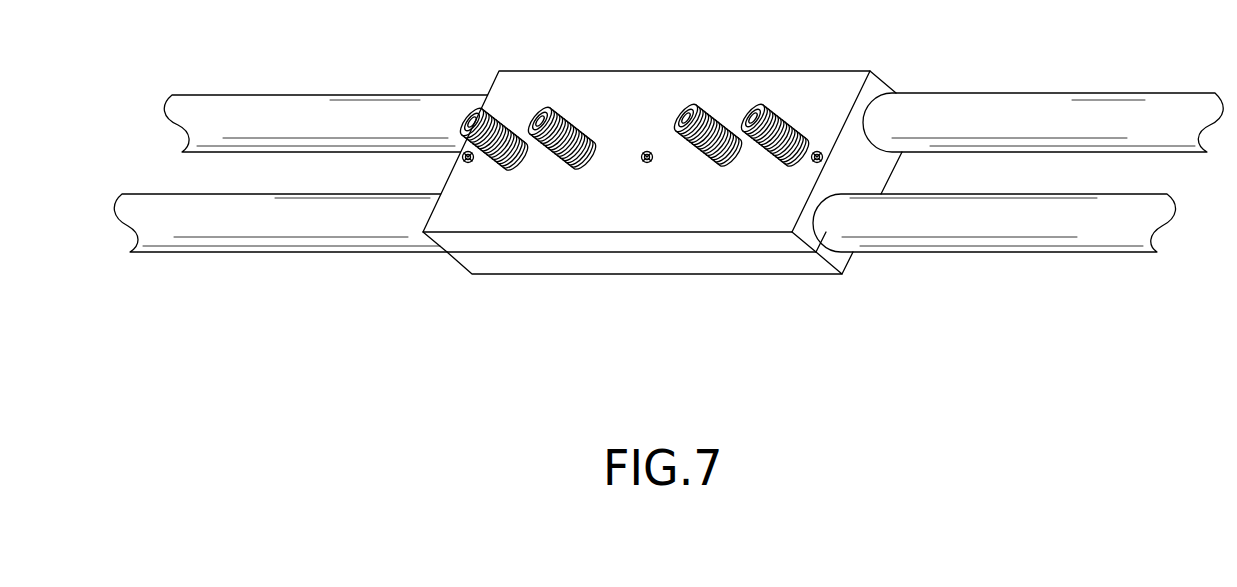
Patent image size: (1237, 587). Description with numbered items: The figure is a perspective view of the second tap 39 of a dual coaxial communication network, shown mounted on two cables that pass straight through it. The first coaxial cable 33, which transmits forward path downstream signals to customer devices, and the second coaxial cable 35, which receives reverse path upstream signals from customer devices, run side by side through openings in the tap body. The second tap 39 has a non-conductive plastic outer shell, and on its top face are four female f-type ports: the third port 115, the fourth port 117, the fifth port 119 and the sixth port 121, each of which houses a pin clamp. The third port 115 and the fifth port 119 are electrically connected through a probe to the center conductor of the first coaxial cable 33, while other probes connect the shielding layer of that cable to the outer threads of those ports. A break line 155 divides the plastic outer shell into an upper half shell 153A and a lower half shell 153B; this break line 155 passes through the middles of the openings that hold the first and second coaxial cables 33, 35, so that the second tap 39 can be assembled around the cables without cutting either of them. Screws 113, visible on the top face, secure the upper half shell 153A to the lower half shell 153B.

The first coaxial cable 33 is at (229, 243).
The second coaxial cable 35 is at (289, 108).
The second tap 39 is at (672, 82).
The screws 113 is at (463, 164).
The third port 115 is at (497, 112).
The fourth port 117 is at (568, 110).
The fifth port 119 is at (728, 112).
The sixth port 121 is at (808, 115).
The upper half shell 153A is at (705, 242).
The lower half shell 153B is at (777, 265).
The break line 155 is at (590, 253).